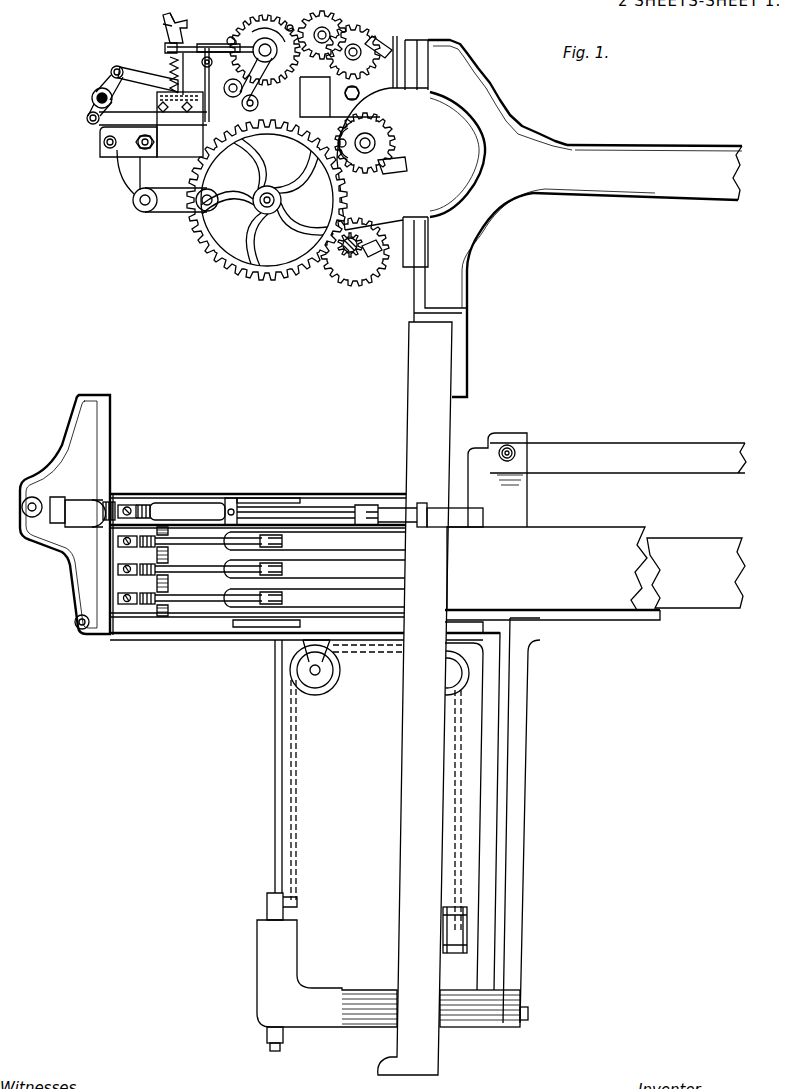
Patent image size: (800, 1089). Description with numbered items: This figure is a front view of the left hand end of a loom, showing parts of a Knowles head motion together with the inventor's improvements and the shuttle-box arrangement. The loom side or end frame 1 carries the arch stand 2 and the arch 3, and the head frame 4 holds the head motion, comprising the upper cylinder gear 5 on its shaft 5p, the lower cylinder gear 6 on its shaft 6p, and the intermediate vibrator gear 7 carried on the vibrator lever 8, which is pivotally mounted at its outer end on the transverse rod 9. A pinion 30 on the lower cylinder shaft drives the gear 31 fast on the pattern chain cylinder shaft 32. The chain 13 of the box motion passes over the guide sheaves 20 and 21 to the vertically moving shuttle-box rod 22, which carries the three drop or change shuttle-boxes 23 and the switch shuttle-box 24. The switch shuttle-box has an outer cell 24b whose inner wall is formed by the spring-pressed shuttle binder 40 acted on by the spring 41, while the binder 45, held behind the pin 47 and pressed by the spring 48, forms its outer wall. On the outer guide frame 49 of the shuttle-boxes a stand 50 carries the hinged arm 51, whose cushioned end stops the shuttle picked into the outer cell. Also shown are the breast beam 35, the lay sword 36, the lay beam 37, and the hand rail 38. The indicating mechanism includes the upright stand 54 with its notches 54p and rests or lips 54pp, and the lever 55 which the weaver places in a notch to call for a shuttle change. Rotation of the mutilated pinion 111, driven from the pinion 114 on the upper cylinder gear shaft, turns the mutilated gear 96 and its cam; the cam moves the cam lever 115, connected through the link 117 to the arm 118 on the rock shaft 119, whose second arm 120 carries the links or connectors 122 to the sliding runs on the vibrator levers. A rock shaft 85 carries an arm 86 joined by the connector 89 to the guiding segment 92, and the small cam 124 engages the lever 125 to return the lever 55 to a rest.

The loom side or end frame 1 is at (413, 377).
The arch stand 2 is at (463, 313).
The arch 3 is at (627, 156).
The head frame 4 is at (421, 46).
The upper cylinder gear 5 is at (358, 28).
The shaft of the upper cylinder gear 5p is at (397, 48).
The lower cylinder gear 6 is at (355, 272).
The shaft of the lower cylinder gear 6p is at (342, 258).
The intermediate vibrator gear 7 is at (398, 128).
The vibrator lever 8 is at (400, 168).
The transverse rod 9 is at (107, 150).
The chain 13 is at (292, 800).
The guide sheave 20 is at (450, 673).
The guide sheave 21 is at (297, 668).
The shuttle-box rod 22 is at (278, 762).
The drop or change shuttle-boxes 23 is at (217, 612).
The switch shuttle-box 24 is at (234, 499).
The shuttle-box or cell 24b is at (270, 497).
The pinion 30 is at (362, 248).
The gear 31 is at (213, 255).
The pattern chain cylinder shaft 32 is at (258, 207).
The breast beam 35 is at (570, 597).
The lay sword 36 is at (503, 815).
The lay beam 37 is at (685, 547).
The hand rail 38 is at (622, 450).
The shuttle binder 40 is at (180, 505).
The spring 41 is at (143, 505).
The binder 45 is at (352, 510).
The pin 47 is at (420, 506).
The spring 48 is at (275, 516).
The outer guide frame 49 is at (102, 460).
The stand 50 is at (57, 505).
The arm 51 is at (85, 522).
The upright stand 54 is at (187, 27).
The notches 54p is at (168, 18).
The rests or lips 54pp is at (163, 26).
The lever 55 is at (168, 51).
The rock shaft 85 is at (140, 206).
The arm 86 is at (175, 208).
The connector 89 is at (209, 75).
The guiding segment 92 is at (290, 25).
The mutilated gear 96 is at (229, 38).
The mutilated pinion 111 is at (318, 24).
The pinion 114 is at (378, 40).
The cam lever 115 is at (205, 128).
The link 117 is at (107, 133).
The arm 118 is at (87, 118).
The rock shaft 119 is at (98, 90).
The second arm 120 is at (114, 68).
The links or connectors 122 is at (142, 72).
The small cam 124 is at (265, 50).
The lever 125 is at (263, 84).